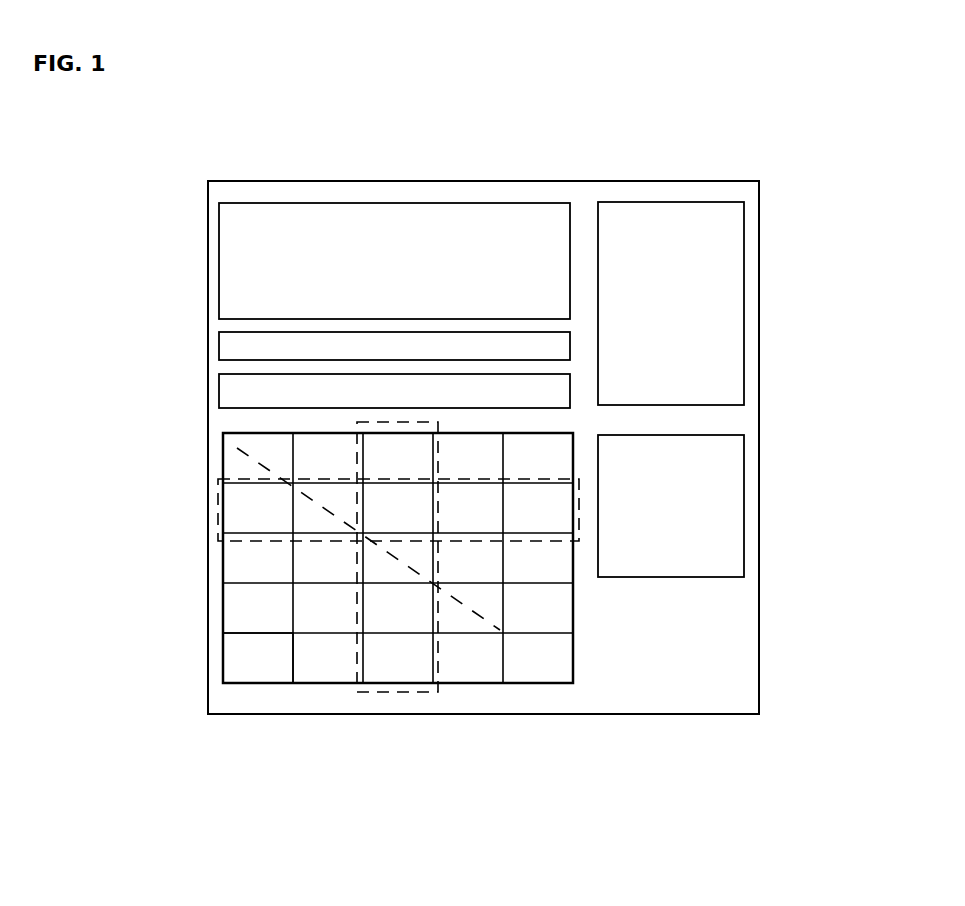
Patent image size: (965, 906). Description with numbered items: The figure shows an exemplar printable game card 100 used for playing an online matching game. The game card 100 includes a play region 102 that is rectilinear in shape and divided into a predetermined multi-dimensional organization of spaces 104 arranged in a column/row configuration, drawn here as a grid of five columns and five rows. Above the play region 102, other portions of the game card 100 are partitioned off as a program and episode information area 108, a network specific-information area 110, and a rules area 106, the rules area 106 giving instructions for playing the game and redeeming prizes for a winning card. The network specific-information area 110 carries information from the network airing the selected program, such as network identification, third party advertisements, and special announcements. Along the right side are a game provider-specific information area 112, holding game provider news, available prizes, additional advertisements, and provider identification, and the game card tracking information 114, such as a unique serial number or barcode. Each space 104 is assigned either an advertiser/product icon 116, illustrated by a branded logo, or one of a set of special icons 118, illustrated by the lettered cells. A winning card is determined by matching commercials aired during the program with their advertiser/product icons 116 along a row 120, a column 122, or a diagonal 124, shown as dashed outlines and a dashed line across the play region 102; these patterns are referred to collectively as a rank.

The game card 100 is at (615, 99).
The play region 102 is at (322, 698).
The space 104 is at (245, 665).
The rules area 106 is at (240, 398).
The program and episode information area 108 is at (279, 225).
The network specific-information area 110 is at (227, 343).
The game provider-specific information area 112 is at (710, 240).
The game card tracking information 114 is at (730, 452).
The advertiser/product icon 116 is at (565, 608).
The special icon 118 is at (483, 662).
The row 120 is at (207, 510).
The column 122 is at (392, 698).
The diagonal 124 is at (523, 647).